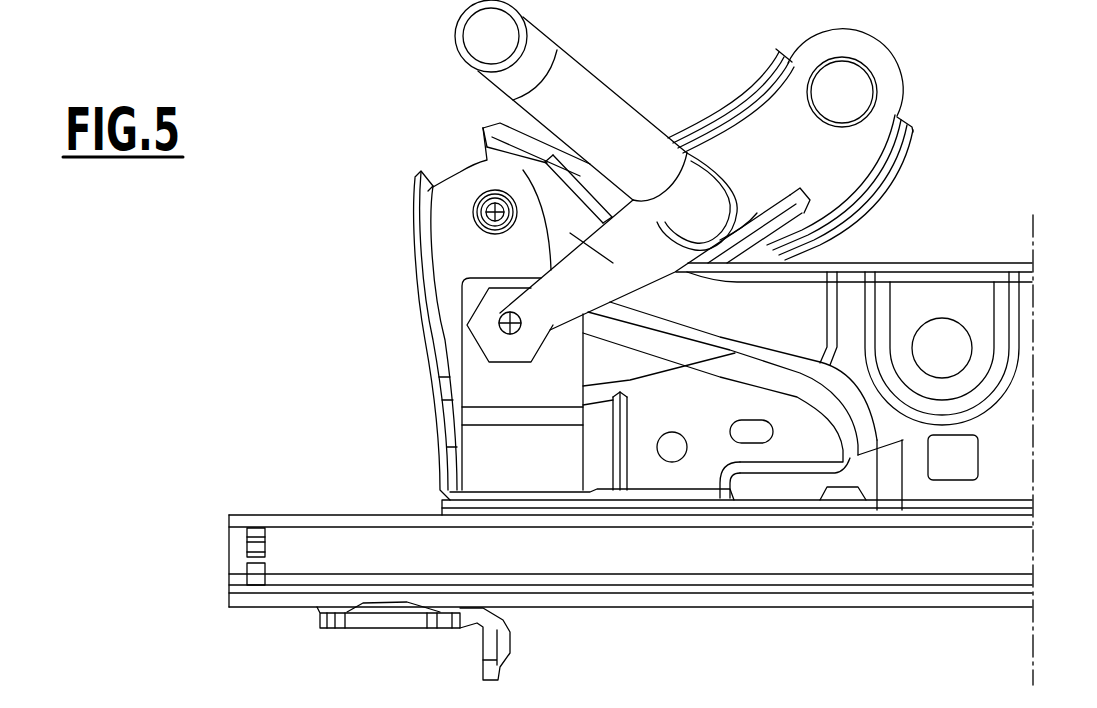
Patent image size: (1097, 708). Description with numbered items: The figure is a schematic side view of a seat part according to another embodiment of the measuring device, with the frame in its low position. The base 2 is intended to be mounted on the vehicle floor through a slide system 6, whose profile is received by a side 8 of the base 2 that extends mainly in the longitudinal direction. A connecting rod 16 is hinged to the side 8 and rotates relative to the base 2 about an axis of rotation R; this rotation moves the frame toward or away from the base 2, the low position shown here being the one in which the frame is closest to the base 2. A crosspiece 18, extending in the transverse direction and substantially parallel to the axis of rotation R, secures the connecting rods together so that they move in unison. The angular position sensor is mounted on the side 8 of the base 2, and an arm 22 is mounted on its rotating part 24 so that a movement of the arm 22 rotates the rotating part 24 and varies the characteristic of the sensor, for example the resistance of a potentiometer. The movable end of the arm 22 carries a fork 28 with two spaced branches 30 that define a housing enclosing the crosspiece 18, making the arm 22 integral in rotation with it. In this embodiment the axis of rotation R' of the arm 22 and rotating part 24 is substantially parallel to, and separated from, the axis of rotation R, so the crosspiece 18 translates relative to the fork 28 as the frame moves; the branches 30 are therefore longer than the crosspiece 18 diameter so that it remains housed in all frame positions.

The base 2 is at (990, 384).
The slide system 6 is at (1000, 578).
The side 8 is at (450, 428).
The connecting rod 16 is at (833, 148).
The crosspiece 18 is at (580, 97).
The arm 22 is at (512, 143).
The rotating part 24 is at (498, 316).
The fork 28 is at (733, 100).
The branches 30 is at (703, 130).
The axis of rotation R is at (446, 203).
The axis of rotation R' is at (449, 334).